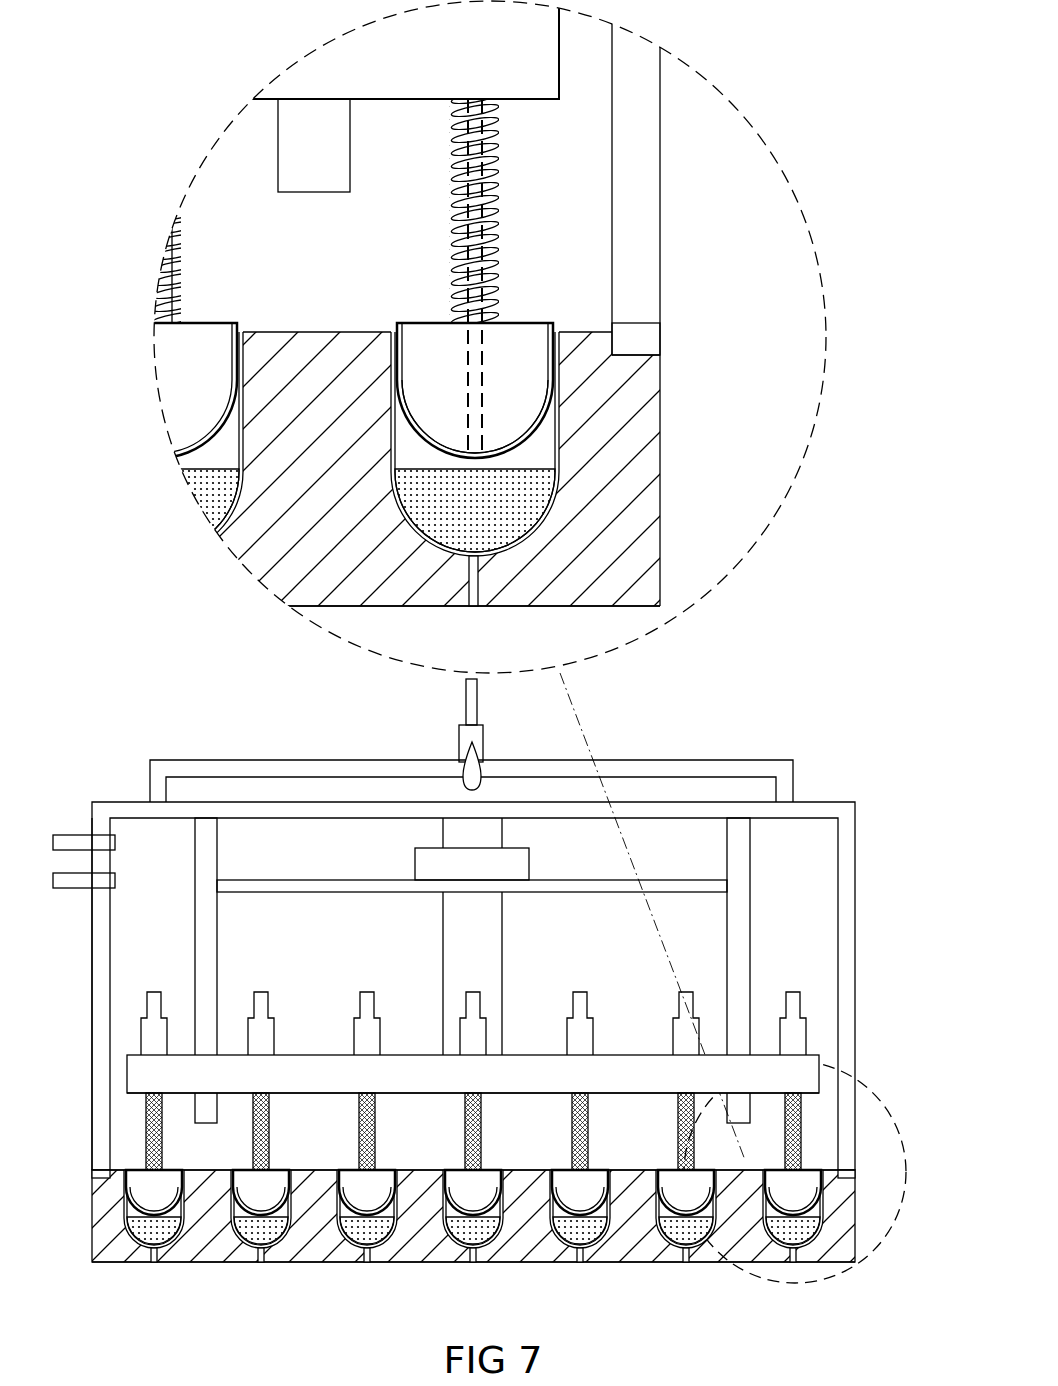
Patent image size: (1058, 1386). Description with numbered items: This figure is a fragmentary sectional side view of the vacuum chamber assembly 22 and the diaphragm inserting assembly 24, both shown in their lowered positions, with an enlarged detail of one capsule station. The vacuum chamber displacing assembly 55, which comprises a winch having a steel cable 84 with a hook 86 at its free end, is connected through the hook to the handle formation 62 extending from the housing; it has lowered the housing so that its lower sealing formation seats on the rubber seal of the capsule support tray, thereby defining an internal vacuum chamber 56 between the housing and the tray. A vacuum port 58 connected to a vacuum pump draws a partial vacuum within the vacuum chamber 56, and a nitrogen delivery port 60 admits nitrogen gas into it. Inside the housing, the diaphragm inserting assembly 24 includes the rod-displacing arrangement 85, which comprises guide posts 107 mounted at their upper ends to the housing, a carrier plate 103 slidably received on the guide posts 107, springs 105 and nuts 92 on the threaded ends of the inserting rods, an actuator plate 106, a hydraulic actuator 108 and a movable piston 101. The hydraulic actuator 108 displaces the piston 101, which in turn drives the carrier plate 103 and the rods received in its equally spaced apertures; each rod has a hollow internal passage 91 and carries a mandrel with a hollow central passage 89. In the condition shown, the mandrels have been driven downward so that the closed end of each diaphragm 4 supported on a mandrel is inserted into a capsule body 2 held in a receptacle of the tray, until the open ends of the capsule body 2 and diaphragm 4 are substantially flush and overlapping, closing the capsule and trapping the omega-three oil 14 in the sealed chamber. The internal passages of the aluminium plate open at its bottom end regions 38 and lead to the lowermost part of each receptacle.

The capsule body 2 is at (388, 436).
The diaphragm 4 is at (539, 433).
The Omega-3 oil 14 is at (532, 503).
The vacuum chamber assembly 22 is at (862, 875).
The diaphragm inserting assembly 24 is at (465, 1018).
The bottom end region 38 is at (344, 608).
The vacuum chamber displacing assembly 55 is at (475, 734).
The vacuum chamber 56 is at (772, 852).
The vacuum port 58 is at (78, 835).
The nitrogen delivery port 60 is at (78, 888).
The handle formation 62 is at (640, 760).
The steel cable 84 is at (466, 692).
The rod-displacing arrangement 85 is at (822, 1076).
The hook 86 is at (458, 742).
The hollow central passage 89 is at (467, 368).
The hollow internal passage 91 is at (447, 133).
The nut 92 is at (367, 992).
The piston 101 is at (502, 920).
The carrier plate 103 is at (147, 1072).
The spring 105 is at (499, 105).
The actuator plate 106 is at (328, 880).
The guide post 107 is at (207, 846).
The hydraulic actuator 108 is at (528, 858).